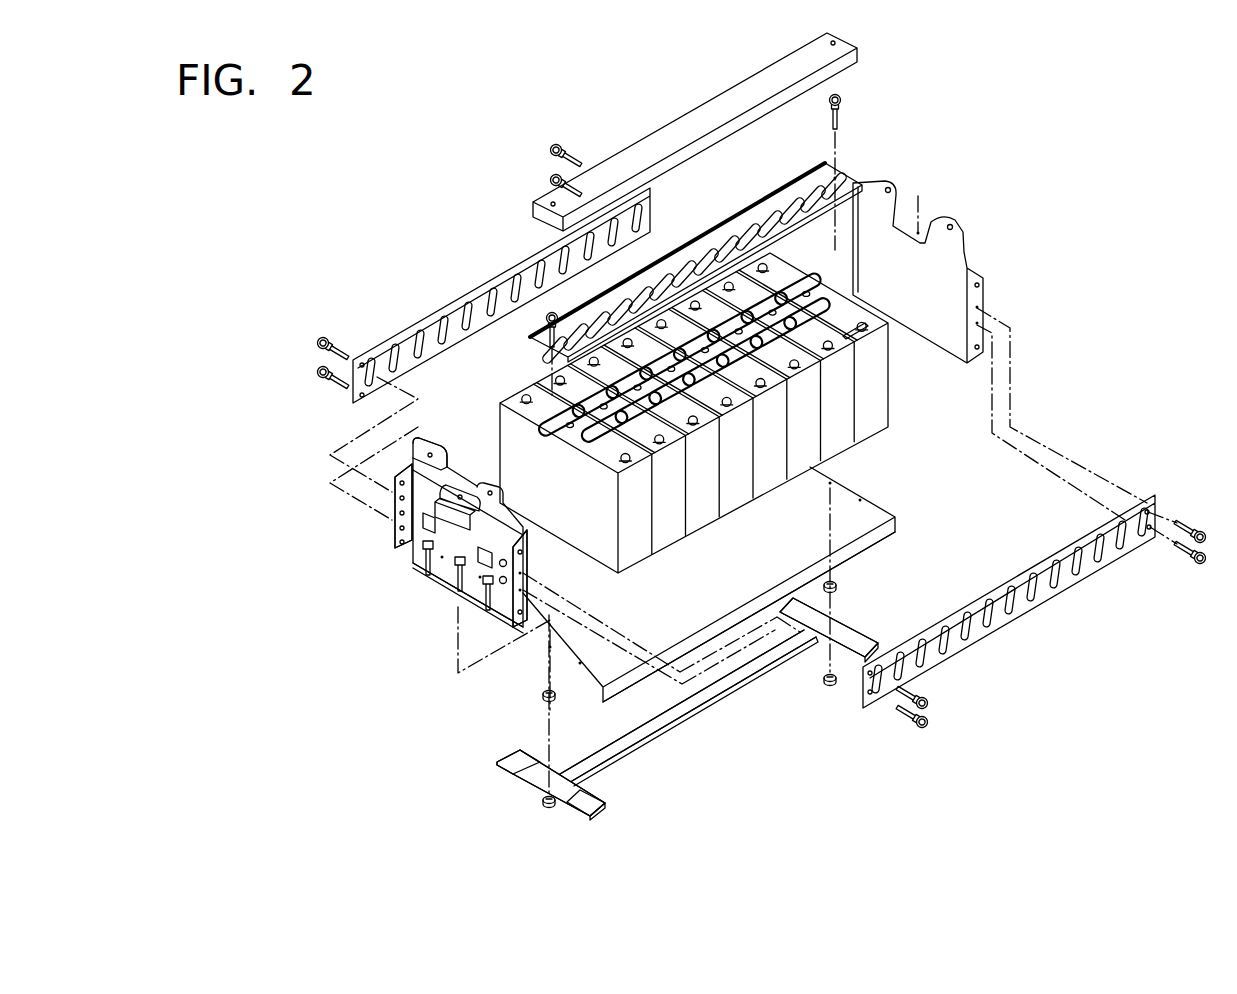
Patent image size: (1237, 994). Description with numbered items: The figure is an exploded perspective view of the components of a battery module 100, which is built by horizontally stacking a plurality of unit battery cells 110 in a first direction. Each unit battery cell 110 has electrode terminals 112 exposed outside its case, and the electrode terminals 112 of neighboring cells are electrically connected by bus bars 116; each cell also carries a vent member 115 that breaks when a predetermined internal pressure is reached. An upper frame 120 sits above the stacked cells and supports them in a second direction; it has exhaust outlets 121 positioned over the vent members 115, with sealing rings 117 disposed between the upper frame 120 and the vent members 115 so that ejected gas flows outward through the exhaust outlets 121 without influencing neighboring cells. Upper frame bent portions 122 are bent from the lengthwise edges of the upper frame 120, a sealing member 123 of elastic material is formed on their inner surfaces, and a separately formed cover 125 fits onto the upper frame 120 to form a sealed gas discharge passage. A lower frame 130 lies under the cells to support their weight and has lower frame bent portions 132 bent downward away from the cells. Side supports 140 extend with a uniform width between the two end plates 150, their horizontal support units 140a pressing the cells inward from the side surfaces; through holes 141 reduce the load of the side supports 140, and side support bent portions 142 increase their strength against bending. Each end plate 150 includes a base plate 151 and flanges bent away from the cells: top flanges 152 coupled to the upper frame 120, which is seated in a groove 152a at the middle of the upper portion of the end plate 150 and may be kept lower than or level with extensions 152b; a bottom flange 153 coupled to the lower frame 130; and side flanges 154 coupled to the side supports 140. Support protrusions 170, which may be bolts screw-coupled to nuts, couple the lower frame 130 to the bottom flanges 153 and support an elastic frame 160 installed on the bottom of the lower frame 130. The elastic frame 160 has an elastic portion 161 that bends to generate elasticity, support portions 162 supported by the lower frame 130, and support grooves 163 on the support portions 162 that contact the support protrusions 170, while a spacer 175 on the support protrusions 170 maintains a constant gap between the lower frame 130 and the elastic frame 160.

The battery module 100 is at (1116, 164).
The unit battery cell 110 is at (675, 530).
The electrode terminal 112 is at (548, 383).
The vent member 115 is at (562, 433).
The bus bar 116 is at (860, 327).
The sealing ring 117 is at (557, 427).
The upper frame 120 is at (745, 210).
The exhaust outlet 121 is at (758, 208).
The upper frame bent portion 122 is at (853, 178).
The sealing member 123 is at (795, 182).
The cover 125 is at (640, 143).
The lower frame 130 is at (905, 522).
The lower frame bent portion 132 is at (875, 542).
The side support 140 is at (398, 328).
The horizontal support unit 140a is at (445, 317).
The through hole 141 is at (1123, 540).
The side support bent portion 142 is at (1107, 503).
The end plate 150 is at (968, 252).
The base plate 151 is at (442, 570).
The top flange 152 is at (458, 495).
The groove 152a is at (470, 488).
The extension 152b is at (412, 463).
The bottom flange 153 is at (463, 593).
The side flange 154 is at (400, 523).
The elastic frame 160 is at (712, 703).
The elastic portion 161 is at (677, 713).
The support portion 162 is at (580, 788).
The support groove 163 is at (520, 753).
The support protrusion 170 is at (463, 592).
The spacer 175 is at (542, 694).